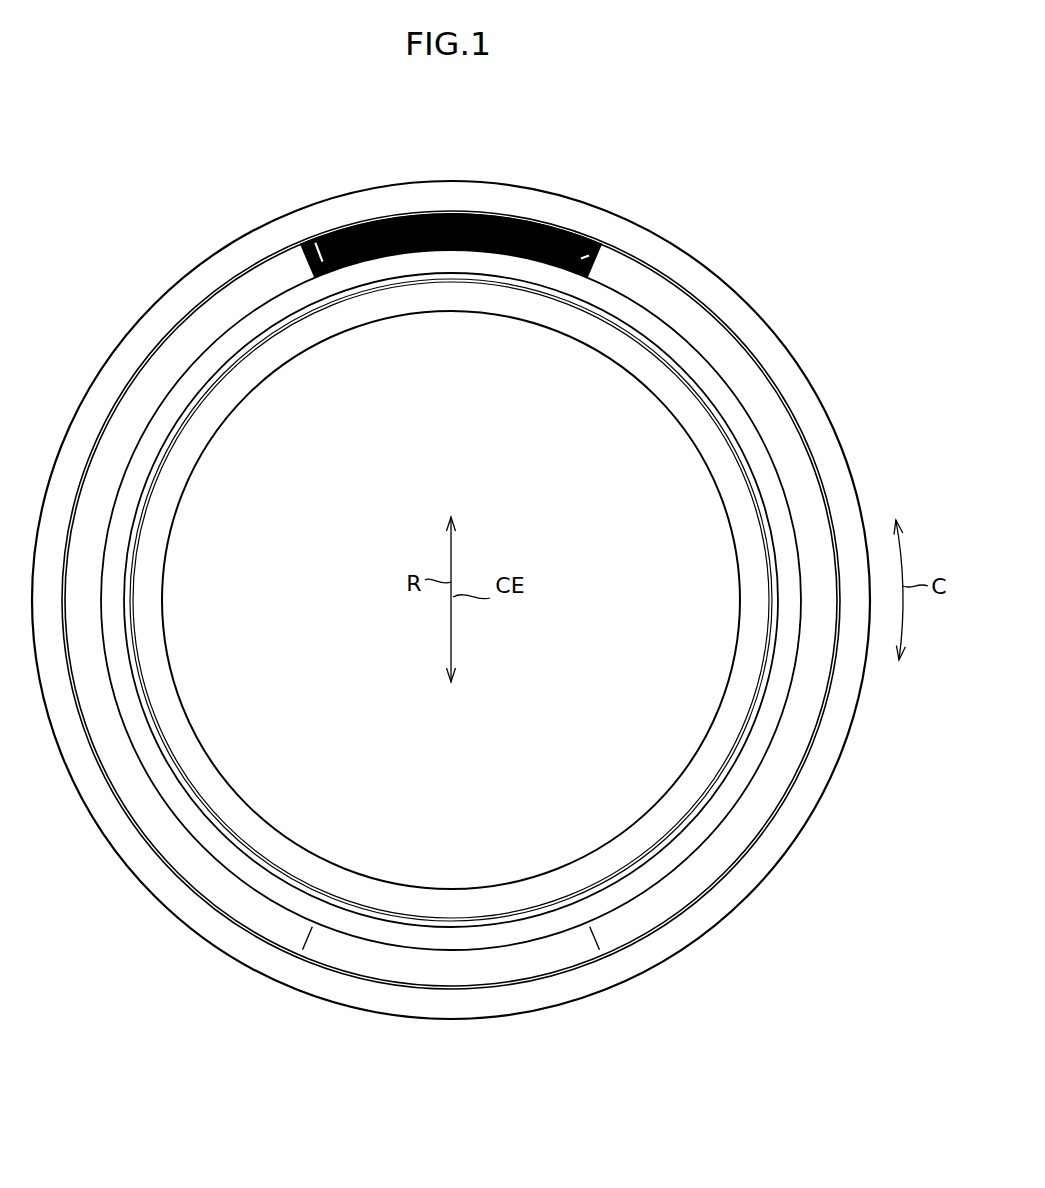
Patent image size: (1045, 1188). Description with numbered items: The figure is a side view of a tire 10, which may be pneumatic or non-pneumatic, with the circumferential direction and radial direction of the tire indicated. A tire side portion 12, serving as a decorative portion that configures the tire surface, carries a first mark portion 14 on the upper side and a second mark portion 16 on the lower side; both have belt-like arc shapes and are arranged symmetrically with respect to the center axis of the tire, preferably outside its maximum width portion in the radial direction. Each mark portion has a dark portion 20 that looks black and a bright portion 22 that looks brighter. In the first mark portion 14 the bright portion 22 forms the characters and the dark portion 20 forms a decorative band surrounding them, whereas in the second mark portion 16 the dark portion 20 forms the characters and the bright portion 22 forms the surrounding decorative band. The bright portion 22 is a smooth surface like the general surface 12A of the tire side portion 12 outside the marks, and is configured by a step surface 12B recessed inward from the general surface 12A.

The tire 10 is at (708, 212).
The tire side portion 12 is at (777, 373).
The general surface 12A is at (735, 832).
The step surface 12B is at (593, 267).
The first mark portion 14 is at (544, 214).
The second mark portion 16 is at (572, 975).
The dark portion 20 is at (312, 238).
The bright portion 22 is at (338, 245).